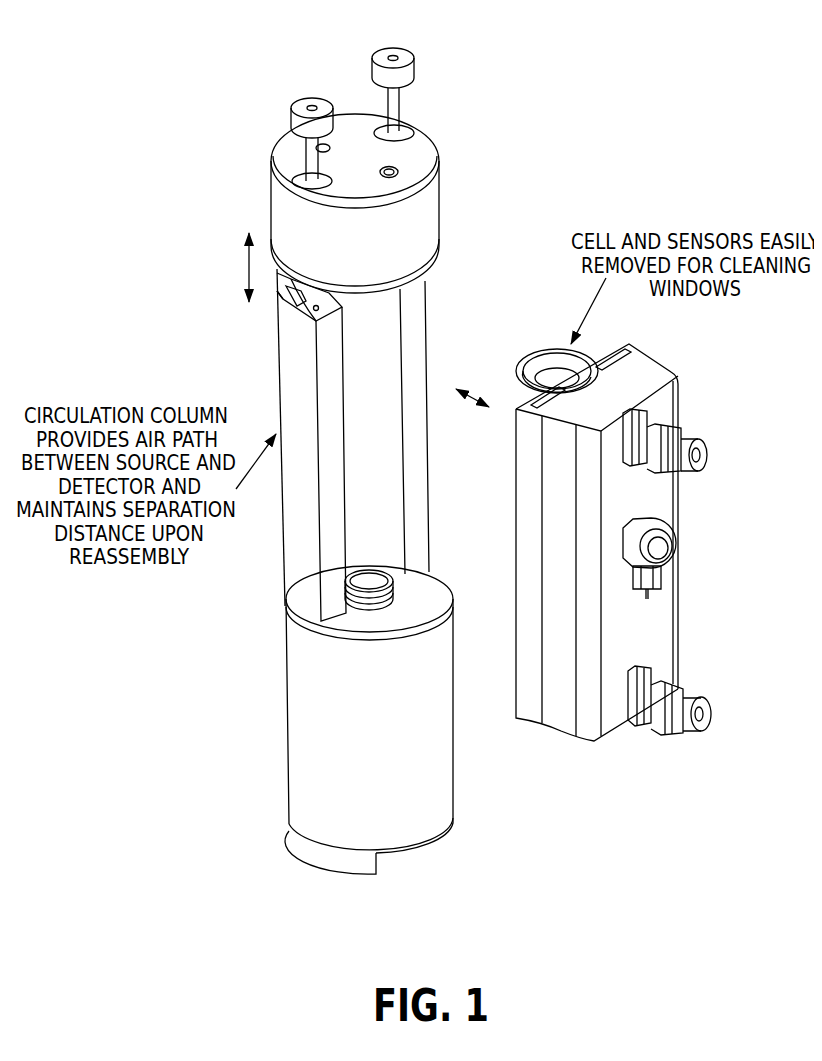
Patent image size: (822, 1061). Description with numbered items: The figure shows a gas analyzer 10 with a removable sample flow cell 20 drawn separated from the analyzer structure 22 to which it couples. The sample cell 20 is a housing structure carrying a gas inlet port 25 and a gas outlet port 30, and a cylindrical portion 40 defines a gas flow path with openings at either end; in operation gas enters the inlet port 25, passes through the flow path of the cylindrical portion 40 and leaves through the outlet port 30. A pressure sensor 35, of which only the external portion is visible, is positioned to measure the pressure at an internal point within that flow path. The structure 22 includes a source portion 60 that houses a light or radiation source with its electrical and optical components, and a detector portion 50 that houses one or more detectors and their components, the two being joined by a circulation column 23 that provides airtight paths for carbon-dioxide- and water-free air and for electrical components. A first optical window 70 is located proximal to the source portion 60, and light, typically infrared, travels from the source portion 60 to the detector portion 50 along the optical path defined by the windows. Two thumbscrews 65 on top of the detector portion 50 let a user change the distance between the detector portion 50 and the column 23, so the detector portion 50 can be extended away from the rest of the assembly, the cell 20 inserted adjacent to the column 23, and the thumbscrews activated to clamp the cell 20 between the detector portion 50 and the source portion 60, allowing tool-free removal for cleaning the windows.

The gas analyzer 10 is at (158, 241).
The removable sample flow cell 20 is at (682, 506).
The structure 22 is at (288, 587).
The column 23 is at (263, 361).
The gas inlet port 25 is at (683, 418).
The gas outlet port 30 is at (682, 682).
The pressure sensor 35 is at (660, 547).
The cylindrical portion 40 is at (549, 378).
The detector portion 50 is at (428, 213).
The source portion 60 is at (300, 715).
The knobs 65 is at (410, 54).
The first optical window 70 is at (380, 573).